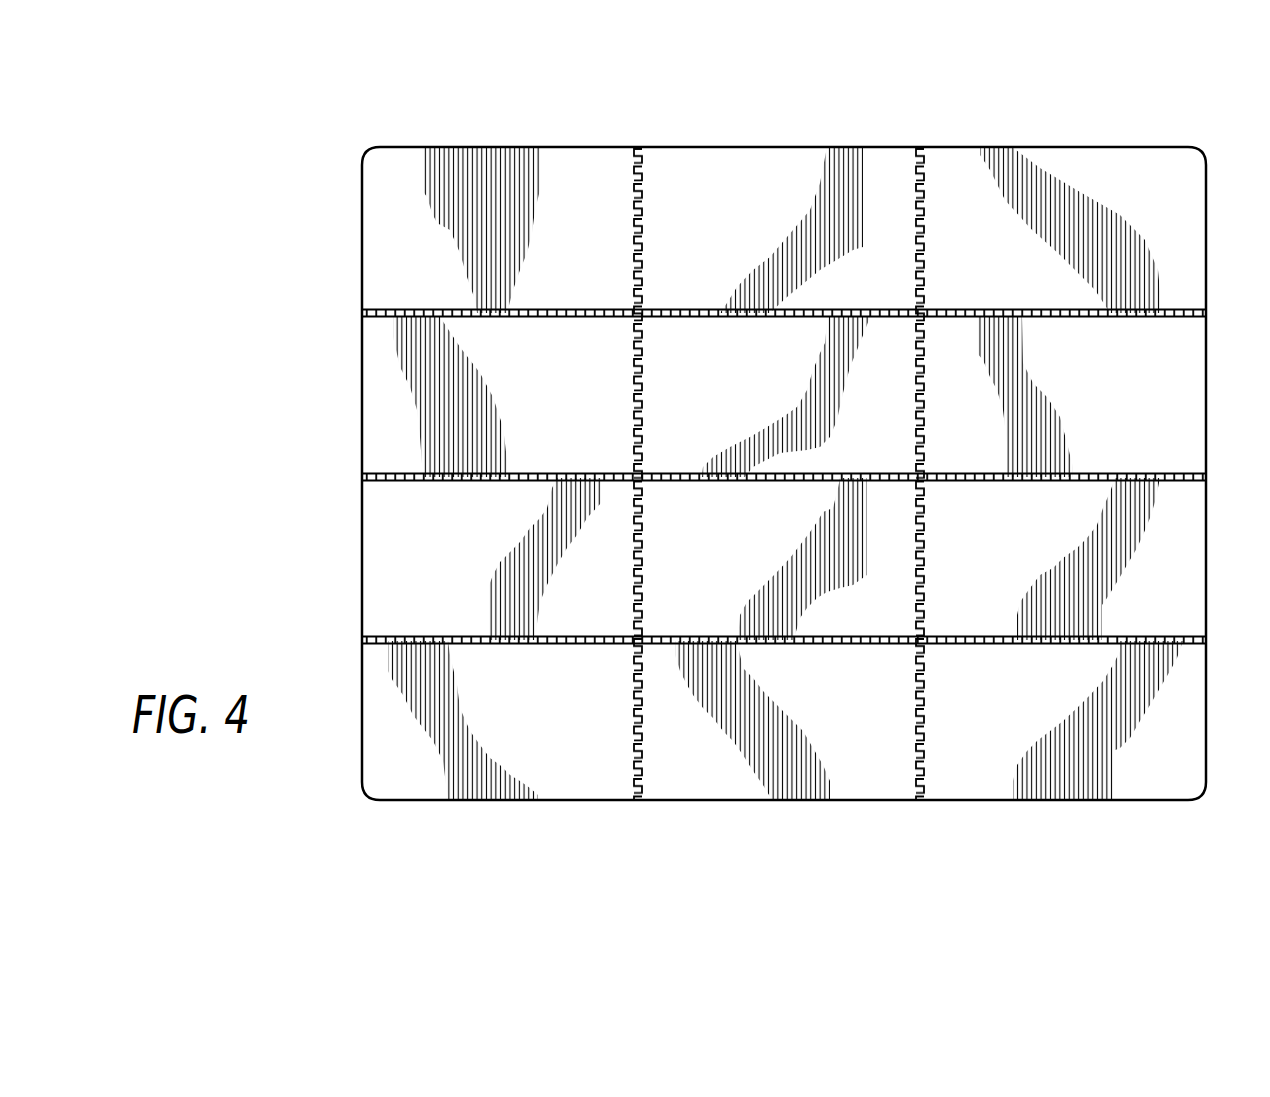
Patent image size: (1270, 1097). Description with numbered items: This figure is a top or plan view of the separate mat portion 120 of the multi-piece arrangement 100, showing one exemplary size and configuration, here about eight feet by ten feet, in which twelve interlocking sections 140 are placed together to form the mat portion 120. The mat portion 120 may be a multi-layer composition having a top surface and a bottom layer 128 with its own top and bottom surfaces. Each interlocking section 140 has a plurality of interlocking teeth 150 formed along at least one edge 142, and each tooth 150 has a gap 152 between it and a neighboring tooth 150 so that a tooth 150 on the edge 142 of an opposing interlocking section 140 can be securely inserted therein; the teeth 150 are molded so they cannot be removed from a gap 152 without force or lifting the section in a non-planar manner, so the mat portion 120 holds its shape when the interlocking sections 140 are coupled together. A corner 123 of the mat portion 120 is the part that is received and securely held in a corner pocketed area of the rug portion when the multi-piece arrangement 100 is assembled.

The multi-piece arrangement 100 is at (588, 848).
The mat portion 120 is at (1171, 147).
The corner 123 is at (1212, 803).
The bottom layer 128 is at (1010, 150).
The interlocking section 140 is at (375, 193).
The edge 142 is at (477, 303).
The interlocking tooth 150 is at (450, 318).
The gap 152 is at (540, 318).